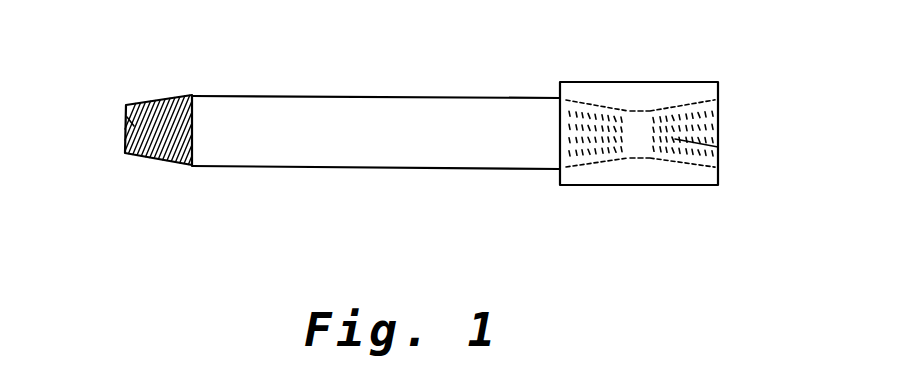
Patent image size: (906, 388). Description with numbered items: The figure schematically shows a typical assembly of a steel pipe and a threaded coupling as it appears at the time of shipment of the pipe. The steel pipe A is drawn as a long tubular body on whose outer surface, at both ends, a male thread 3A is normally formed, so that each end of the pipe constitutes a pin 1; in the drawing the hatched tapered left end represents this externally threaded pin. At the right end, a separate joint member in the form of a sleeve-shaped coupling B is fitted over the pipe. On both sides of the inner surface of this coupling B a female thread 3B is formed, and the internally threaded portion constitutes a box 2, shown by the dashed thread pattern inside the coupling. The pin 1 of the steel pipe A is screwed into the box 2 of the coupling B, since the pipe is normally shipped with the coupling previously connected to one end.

The pin 1 is at (157, 95).
The box 2 is at (650, 93).
The male thread 3A is at (127, 117).
The female thread 3B is at (718, 147).
The steel pipe A is at (278, 92).
The coupling B is at (607, 81).